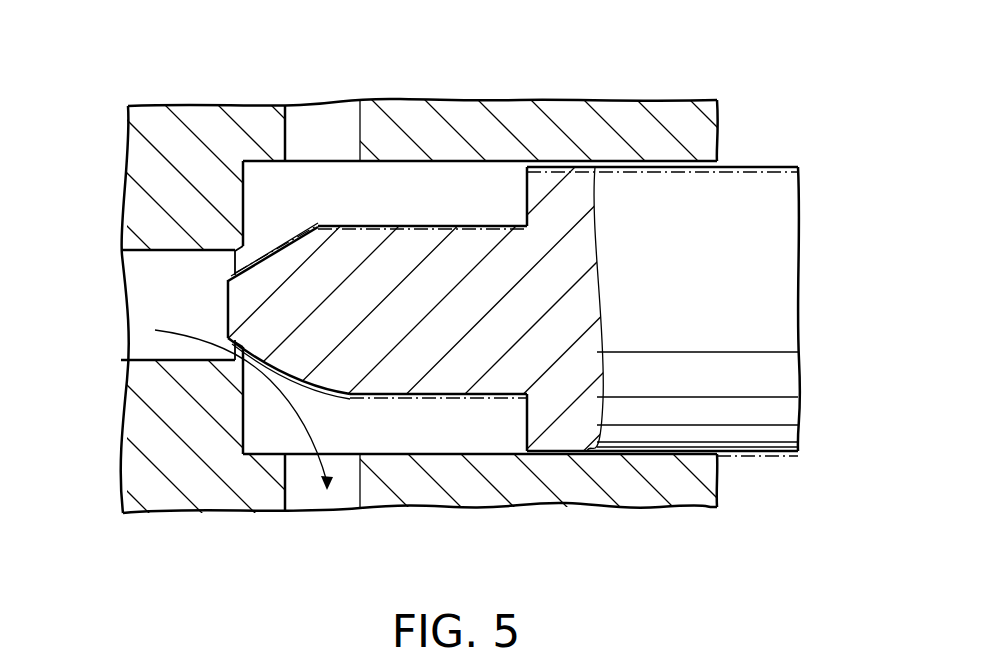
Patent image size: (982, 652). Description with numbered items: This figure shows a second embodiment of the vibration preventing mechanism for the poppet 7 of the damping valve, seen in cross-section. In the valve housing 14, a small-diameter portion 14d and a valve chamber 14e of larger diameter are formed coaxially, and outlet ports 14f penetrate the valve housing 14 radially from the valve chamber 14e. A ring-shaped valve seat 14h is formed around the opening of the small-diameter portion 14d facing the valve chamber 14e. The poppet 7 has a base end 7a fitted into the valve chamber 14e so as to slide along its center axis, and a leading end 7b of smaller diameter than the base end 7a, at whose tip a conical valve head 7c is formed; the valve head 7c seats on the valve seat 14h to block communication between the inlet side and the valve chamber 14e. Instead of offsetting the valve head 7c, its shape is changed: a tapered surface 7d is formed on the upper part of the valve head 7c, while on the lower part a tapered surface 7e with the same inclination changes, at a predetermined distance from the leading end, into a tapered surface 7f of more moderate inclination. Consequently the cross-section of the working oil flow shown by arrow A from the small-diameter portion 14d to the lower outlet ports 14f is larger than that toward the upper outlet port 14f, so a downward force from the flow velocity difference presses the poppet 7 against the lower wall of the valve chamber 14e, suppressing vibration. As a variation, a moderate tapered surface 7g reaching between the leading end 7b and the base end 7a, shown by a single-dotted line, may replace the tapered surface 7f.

The valve housing 14 is at (151, 96).
The small-diameter portion 14d is at (148, 287).
The valve chamber 14e is at (332, 175).
The outlet ports 14f is at (323, 497).
The valve seat 14h is at (236, 362).
The arrow A is at (192, 335).
The poppet 7 is at (793, 140).
The base end 7a is at (758, 166).
The leading end 7b is at (458, 223).
The valve head 7c is at (269, 238).
The tapered surface 7d is at (310, 226).
The tapered surface 7e is at (240, 347).
The tapered surface 7f is at (341, 397).
The moderate tapered surface 7g is at (437, 386).